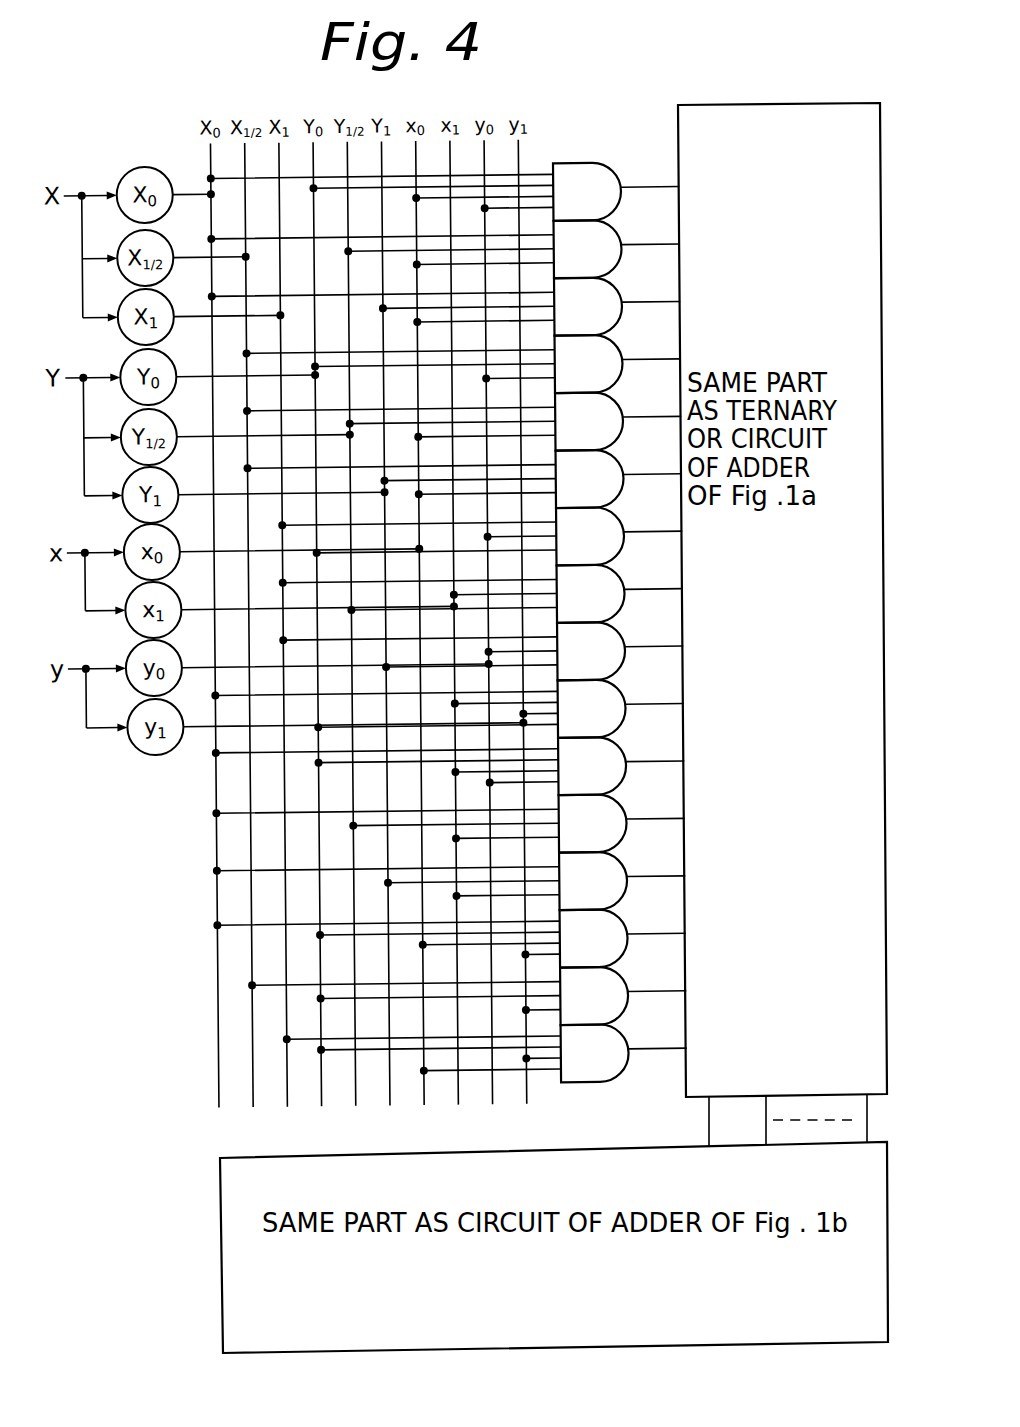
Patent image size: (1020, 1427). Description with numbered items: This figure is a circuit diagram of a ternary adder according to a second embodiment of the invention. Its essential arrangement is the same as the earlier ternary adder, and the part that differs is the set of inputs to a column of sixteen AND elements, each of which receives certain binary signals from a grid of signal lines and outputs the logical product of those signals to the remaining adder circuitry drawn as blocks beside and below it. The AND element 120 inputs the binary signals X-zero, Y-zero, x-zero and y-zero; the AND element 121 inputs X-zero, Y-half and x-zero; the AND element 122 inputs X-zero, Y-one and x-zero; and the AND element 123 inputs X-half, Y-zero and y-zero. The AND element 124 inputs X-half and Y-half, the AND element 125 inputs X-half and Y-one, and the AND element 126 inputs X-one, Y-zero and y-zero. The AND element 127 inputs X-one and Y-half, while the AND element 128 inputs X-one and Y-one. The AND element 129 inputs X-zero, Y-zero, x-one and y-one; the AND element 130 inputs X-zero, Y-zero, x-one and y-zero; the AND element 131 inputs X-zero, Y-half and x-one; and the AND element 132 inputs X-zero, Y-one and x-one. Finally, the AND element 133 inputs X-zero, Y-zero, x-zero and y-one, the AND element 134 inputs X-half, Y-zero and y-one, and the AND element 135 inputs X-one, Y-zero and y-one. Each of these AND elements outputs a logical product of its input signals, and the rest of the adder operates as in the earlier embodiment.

The AND element 120 is at (601, 173).
The AND element 121 is at (616, 230).
The AND element 122 is at (616, 288).
The AND element 123 is at (616, 345).
The AND element 124 is at (616, 403).
The AND element 125 is at (616, 460).
The AND element 126 is at (616, 517).
The AND element 127 is at (616, 575).
The AND element 128 is at (616, 632).
The AND element 129 is at (616, 690).
The AND element 130 is at (616, 747).
The AND element 131 is at (616, 805).
The AND element 132 is at (616, 862).
The AND element 133 is at (616, 920).
The AND element 134 is at (616, 977).
The AND element 135 is at (616, 1034).